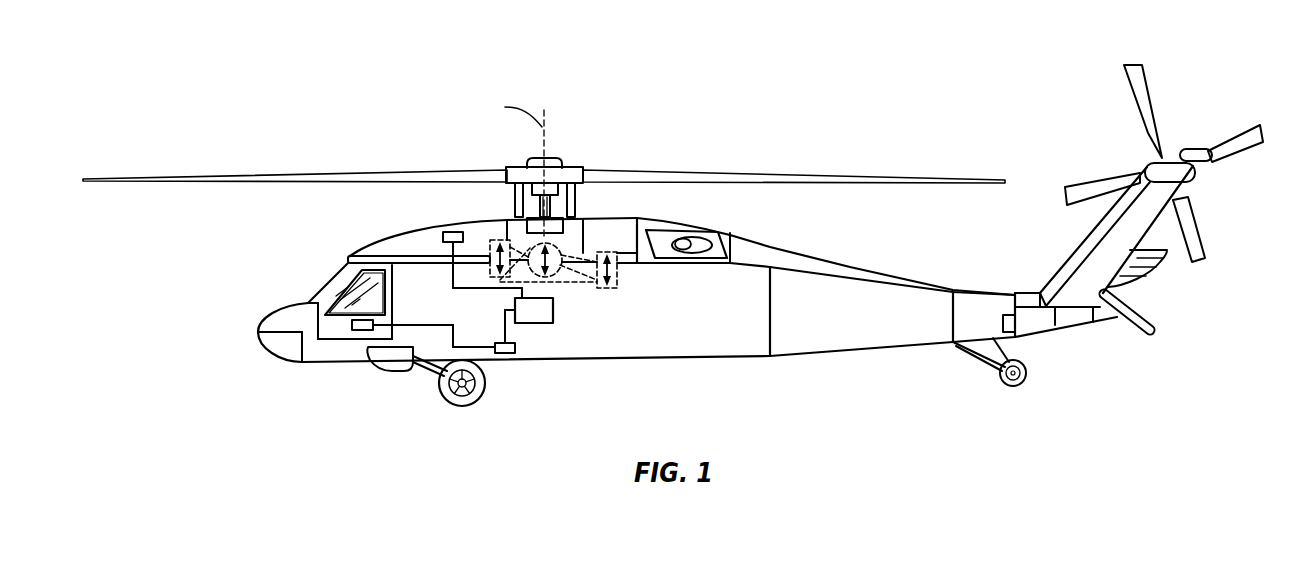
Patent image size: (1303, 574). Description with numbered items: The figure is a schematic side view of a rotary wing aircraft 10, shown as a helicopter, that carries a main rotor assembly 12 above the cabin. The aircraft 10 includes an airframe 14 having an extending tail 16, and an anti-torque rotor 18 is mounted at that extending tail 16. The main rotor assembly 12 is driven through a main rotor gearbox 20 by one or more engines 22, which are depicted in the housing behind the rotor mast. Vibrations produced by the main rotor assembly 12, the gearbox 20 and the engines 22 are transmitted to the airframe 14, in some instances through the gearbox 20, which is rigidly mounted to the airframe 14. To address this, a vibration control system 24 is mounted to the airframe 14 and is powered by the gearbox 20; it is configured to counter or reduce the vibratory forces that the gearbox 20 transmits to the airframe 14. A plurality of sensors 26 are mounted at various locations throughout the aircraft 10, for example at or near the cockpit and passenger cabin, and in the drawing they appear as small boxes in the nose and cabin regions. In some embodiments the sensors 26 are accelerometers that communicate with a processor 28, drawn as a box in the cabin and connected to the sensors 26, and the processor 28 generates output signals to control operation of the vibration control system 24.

The rotary wing aircraft 10 is at (284, 122).
The main rotor assembly 12 is at (572, 156).
The airframe 14 is at (814, 252).
The extending tail 16 is at (975, 305).
The anti-torque rotor 18 is at (1137, 87).
The main rotor gearbox 20 is at (563, 243).
The engines 22 is at (668, 232).
The vibration control system 24 is at (625, 345).
The sensors 26 is at (453, 230).
The processor 28 is at (537, 323).